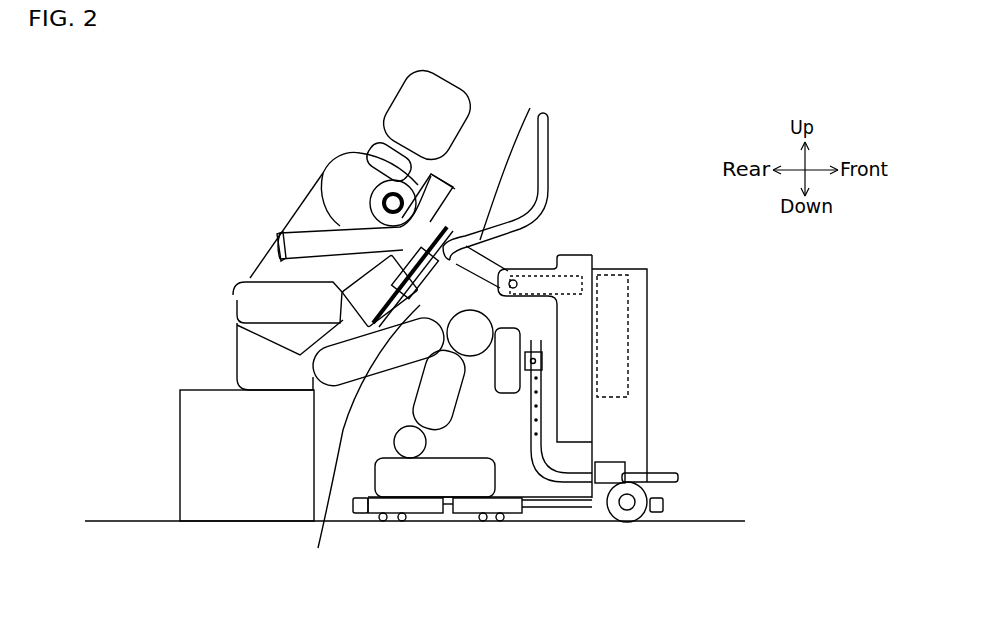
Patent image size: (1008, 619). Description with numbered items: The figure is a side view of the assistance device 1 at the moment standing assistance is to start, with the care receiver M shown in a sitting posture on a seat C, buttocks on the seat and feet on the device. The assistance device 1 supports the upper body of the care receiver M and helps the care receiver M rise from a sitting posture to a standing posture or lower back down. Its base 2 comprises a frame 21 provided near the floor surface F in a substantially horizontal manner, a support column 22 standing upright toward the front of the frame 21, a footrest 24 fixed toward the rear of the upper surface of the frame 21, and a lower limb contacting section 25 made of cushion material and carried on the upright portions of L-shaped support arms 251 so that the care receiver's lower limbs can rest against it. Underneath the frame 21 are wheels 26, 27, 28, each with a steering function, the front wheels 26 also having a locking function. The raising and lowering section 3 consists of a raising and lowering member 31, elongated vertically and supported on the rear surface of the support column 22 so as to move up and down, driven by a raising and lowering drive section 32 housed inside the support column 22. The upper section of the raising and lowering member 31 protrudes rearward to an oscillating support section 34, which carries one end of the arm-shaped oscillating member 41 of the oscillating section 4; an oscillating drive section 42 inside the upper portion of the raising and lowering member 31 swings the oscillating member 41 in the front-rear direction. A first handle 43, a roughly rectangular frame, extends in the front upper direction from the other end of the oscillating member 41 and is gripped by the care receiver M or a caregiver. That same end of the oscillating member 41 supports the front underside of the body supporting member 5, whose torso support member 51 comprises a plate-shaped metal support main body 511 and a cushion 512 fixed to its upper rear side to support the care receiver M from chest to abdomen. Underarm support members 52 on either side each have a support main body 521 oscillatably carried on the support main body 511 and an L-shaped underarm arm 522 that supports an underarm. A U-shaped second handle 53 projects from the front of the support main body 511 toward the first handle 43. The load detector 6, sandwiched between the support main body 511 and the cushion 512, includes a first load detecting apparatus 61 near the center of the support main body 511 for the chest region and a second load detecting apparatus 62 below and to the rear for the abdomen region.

The assistance device 1 is at (652, 135).
The base 2 is at (515, 520).
The frame 21 is at (598, 505).
The support column 22 is at (637, 370).
The footrest 24 is at (557, 500).
The lower limb contacting section 25 is at (607, 405).
The support arm 251 is at (540, 410).
The front wheel 26 is at (632, 505).
The wheel 27 is at (500, 518).
The wheel 28 is at (386, 518).
The raising and lowering section 3 is at (662, 352).
The raising and lowering member 31 is at (600, 263).
The raising and lowering drive section 32 is at (612, 325).
The oscillating support section 34 is at (594, 236).
The oscillating section 4 is at (564, 297).
The oscillating member 41 is at (487, 268).
The oscillating drive section 42 is at (588, 268).
The first handle 43 is at (543, 143).
The body supporting member 5 is at (301, 222).
The torso support member 51 is at (350, 325).
The cushion 512 is at (335, 284).
The underarm support member 52 is at (367, 221).
The support main body 521 is at (447, 217).
The underarm arm 522 is at (358, 220).
The second handle 53 is at (361, 440).
The load detector 6 is at (289, 218).
The first load detecting apparatus 61 is at (292, 232).
The second load detecting apparatus 62 is at (286, 247).
The support main body 511 is at (519, 162).
The seat C is at (196, 455).
The floor surface F is at (130, 521).
The care receiver M is at (233, 302).